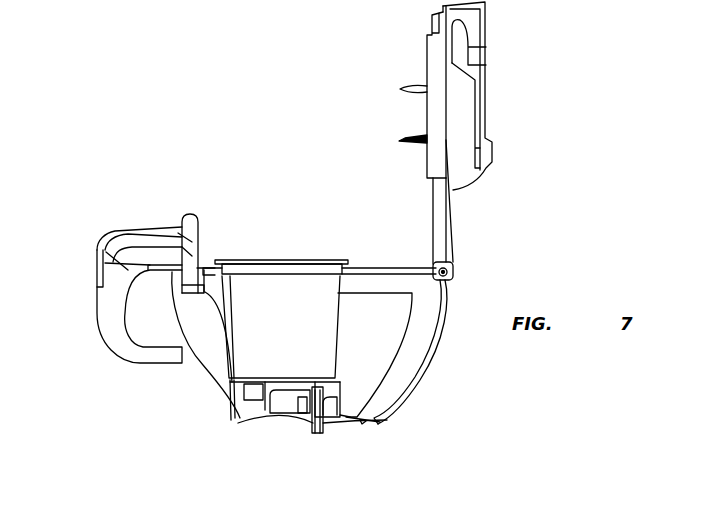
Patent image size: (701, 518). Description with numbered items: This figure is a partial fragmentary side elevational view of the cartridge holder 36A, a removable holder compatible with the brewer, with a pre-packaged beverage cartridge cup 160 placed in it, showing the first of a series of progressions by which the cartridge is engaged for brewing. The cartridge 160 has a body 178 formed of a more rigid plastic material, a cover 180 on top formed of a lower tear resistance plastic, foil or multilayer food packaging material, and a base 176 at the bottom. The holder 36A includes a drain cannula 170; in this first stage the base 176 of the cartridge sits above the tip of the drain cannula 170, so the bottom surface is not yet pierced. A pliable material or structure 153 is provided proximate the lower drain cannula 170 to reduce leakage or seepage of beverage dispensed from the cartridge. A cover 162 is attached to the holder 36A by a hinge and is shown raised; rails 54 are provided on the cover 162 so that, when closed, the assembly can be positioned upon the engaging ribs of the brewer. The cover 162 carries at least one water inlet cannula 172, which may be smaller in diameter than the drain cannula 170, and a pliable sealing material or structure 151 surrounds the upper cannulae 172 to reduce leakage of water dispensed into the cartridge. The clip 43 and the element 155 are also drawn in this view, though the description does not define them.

The cover 162 is at (500, 42).
The rails 54 is at (470, 107).
The pliable sealing material or structure 151 is at (432, 50).
The water inlet cannula 172 is at (413, 86).
The cover of the cartridge 180 is at (242, 258).
The pre-packaged beverage cartridge cup 160 is at (346, 314).
The cartridge holder 36A is at (440, 406).
The clip 43 is at (97, 305).
The body of the cartridge 178 is at (245, 348).
The base of the cartridge 176 is at (246, 375).
The drain cannula 170 is at (268, 413).
The pliable material or structure 153 is at (325, 407).
The outlet 155 is at (362, 420).